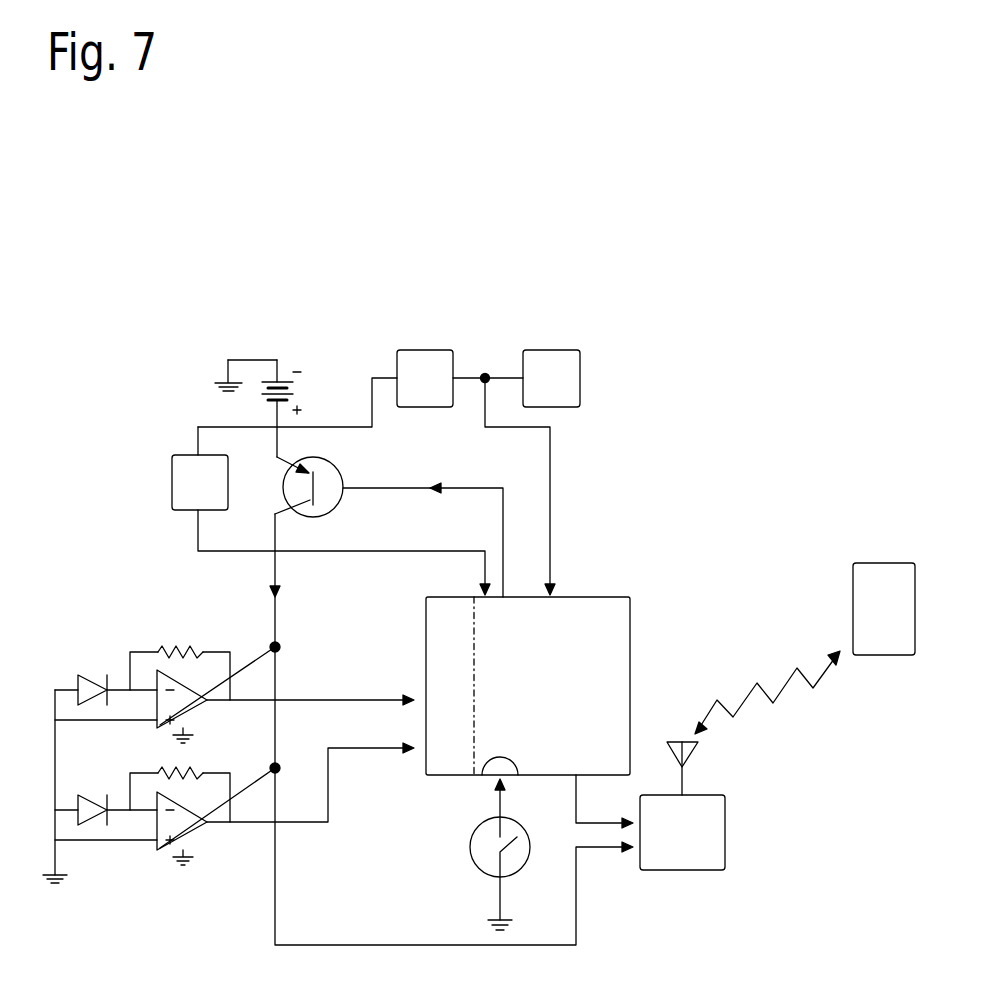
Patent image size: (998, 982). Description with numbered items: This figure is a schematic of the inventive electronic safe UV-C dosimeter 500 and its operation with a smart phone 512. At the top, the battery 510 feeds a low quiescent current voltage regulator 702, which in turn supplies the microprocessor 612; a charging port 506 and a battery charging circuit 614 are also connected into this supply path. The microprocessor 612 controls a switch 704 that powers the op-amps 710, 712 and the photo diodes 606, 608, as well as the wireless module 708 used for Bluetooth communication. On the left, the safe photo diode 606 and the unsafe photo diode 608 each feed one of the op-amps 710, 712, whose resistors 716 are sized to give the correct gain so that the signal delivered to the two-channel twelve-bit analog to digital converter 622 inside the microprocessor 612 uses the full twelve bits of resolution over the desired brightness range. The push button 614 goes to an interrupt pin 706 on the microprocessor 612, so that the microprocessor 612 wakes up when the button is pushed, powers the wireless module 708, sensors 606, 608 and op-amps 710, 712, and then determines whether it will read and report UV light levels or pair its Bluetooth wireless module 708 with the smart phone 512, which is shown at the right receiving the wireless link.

The safe UV-C electronic dosimeter 500 is at (745, 187).
The charging port 506 is at (577, 330).
The battery 510 is at (317, 372).
The smart phone 512 is at (905, 630).
The safe photo diode 606 is at (90, 678).
The unsafe photo diode 608 is at (90, 798).
The microprocessor 612 is at (531, 686).
The battery charging circuit 614 is at (438, 348).
The two-channel internal 12 bit analog to digital converter 622 is at (443, 608).
The low quiescent current voltage regulator 702 is at (180, 453).
The switch 704 is at (332, 472).
The interrupt pin 706 is at (513, 782).
The wireless transceiver 708 is at (710, 857).
The op-amp 710 is at (272, 686).
The op-amp 712 is at (198, 835).
The resistors 716 is at (208, 640).